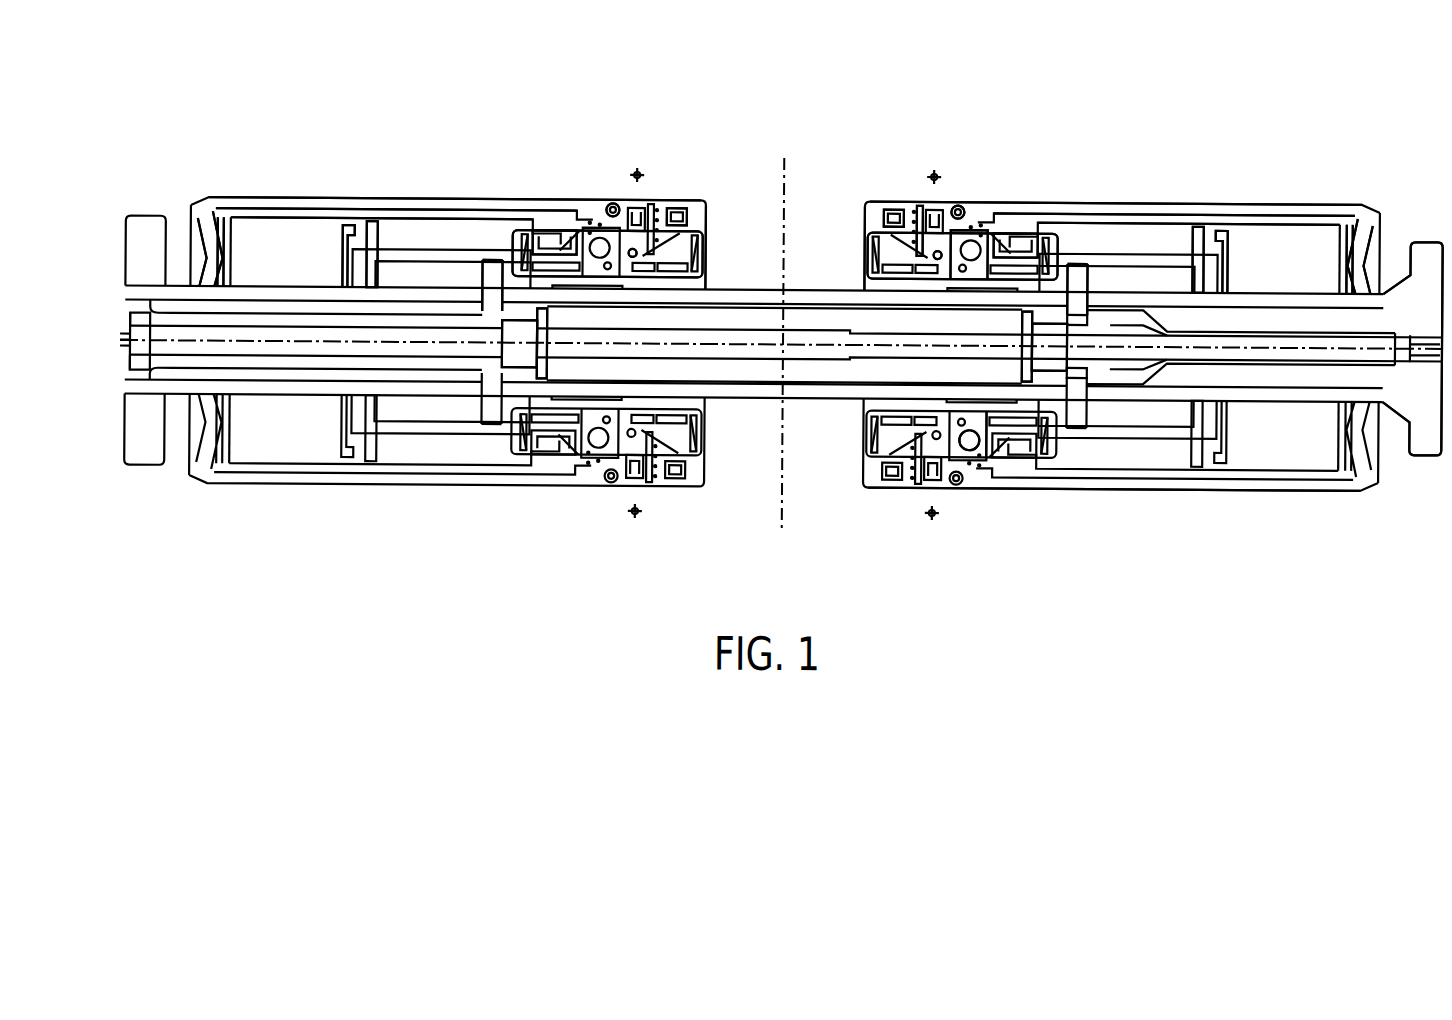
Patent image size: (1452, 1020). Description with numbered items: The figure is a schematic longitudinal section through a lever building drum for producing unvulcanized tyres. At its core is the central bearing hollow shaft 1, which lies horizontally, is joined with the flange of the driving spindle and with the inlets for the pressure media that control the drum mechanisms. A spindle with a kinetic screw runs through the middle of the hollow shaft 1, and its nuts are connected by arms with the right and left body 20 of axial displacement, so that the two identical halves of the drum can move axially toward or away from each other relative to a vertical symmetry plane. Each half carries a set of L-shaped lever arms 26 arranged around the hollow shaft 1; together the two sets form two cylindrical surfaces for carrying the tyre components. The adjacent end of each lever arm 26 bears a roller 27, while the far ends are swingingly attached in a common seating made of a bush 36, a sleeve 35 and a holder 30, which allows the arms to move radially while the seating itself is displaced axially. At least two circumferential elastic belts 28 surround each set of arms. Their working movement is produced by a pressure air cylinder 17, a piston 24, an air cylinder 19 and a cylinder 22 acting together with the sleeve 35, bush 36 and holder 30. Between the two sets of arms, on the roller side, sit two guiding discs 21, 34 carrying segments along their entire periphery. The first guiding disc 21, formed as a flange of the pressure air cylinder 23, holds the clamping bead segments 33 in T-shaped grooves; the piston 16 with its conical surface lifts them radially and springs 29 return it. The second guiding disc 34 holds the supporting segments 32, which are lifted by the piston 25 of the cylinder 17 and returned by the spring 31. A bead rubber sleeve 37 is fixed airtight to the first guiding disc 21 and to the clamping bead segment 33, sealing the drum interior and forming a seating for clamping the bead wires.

The central bearing hollow shaft 1 is at (1420, 251).
The piston 16 is at (677, 245).
The pressure air cylinder 17 is at (513, 215).
The air cylinder 19 is at (373, 225).
The body of axial displacement 20 is at (543, 285).
The first guiding disc 21 is at (908, 219).
The cylinder 22 is at (470, 204).
The pressure air cylinder 23 is at (705, 234).
The piston 24 is at (353, 235).
The piston 25 is at (575, 249).
The L-shaped lever arms 26 is at (248, 207).
The roller 27 is at (955, 217).
The circumferential elastic belts 28 is at (357, 226).
The springs 29 is at (913, 480).
The holder 30 is at (196, 226).
The spring 31 is at (993, 430).
The supporting segments 32 is at (614, 214).
The clamping bead segments 33 is at (643, 251).
The second guiding disc 34 is at (978, 428).
The sleeve 35 is at (223, 241).
The bush 36 is at (220, 216).
The bead rubber sleeve 37 is at (652, 235).